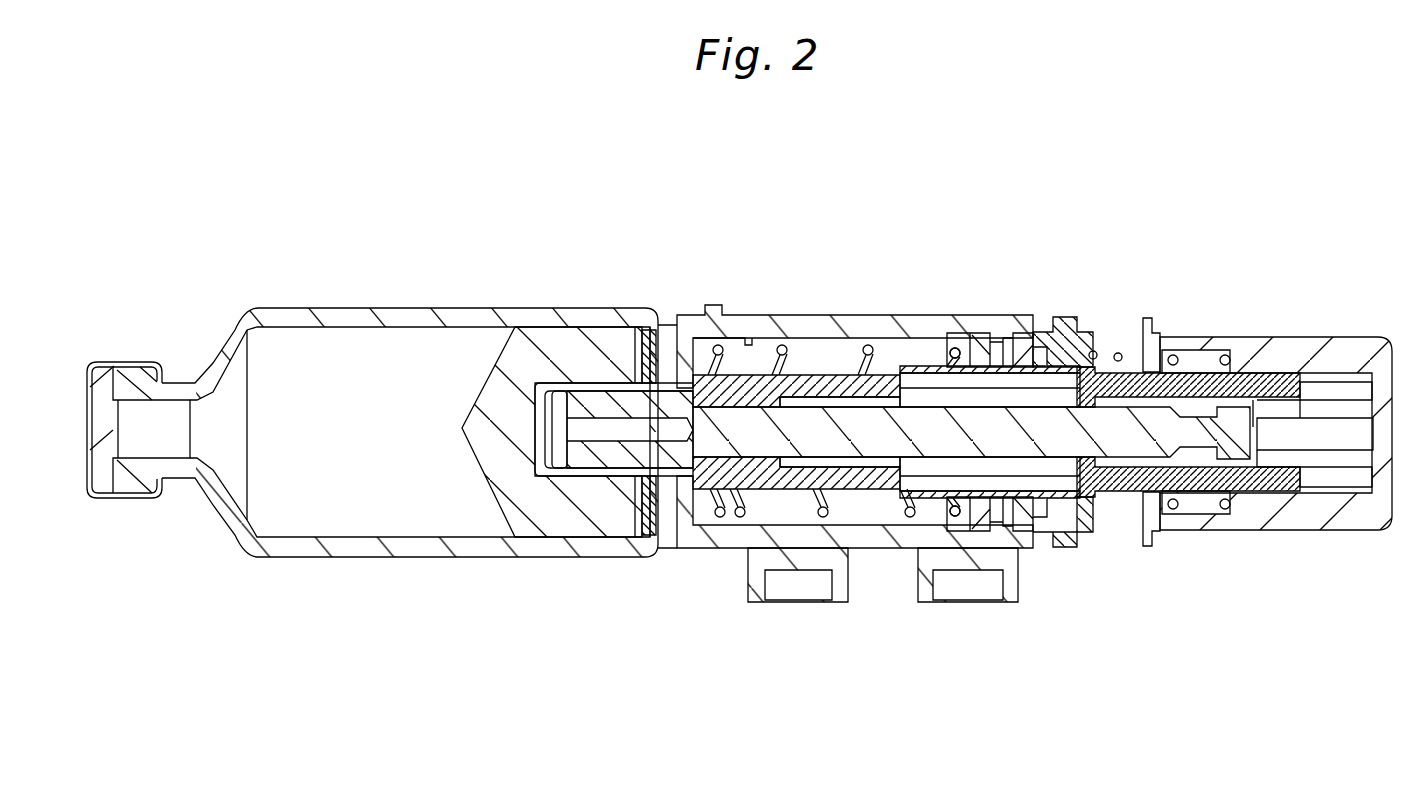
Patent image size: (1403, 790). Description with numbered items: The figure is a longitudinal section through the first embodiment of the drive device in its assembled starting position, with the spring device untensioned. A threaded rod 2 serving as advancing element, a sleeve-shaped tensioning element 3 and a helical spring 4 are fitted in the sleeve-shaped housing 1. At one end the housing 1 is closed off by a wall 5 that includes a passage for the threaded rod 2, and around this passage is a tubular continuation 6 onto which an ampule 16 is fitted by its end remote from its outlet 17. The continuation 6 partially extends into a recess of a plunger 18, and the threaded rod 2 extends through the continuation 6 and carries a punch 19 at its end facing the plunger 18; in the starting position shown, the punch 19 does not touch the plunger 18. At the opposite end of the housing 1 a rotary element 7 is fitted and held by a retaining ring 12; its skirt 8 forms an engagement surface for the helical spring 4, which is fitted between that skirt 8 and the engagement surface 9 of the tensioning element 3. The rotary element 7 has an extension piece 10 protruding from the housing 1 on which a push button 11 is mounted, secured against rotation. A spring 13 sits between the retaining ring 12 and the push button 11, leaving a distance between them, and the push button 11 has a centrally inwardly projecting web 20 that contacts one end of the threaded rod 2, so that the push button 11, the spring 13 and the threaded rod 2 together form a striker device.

The housing 1 is at (807, 325).
The threaded rod 2 is at (738, 430).
The tensioning element 3 is at (762, 478).
The helical spring 4 is at (868, 345).
The wall 5 is at (670, 337).
The tubular continuation 6 is at (632, 388).
The rotary element 7 is at (890, 495).
The skirt 8 is at (1027, 343).
The engagement surface 9 is at (728, 337).
The extension piece 10 is at (1125, 482).
The push button 11 is at (1275, 358).
The retaining ring 12 is at (1083, 330).
The spring 13 is at (1118, 353).
The ampule 16 is at (333, 370).
The outlet 17 is at (177, 428).
The plunger 18 is at (573, 350).
The punch 19 is at (575, 430).
The web 20 is at (1310, 410).